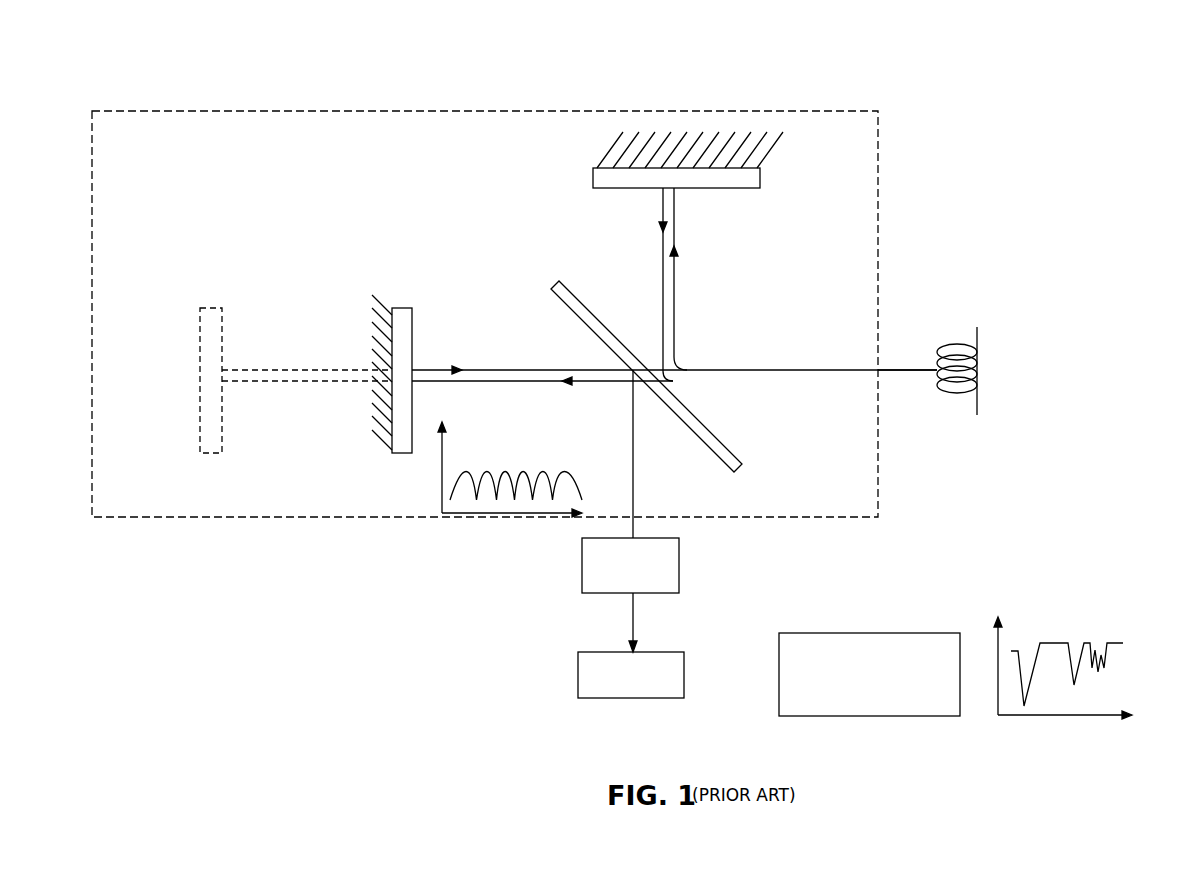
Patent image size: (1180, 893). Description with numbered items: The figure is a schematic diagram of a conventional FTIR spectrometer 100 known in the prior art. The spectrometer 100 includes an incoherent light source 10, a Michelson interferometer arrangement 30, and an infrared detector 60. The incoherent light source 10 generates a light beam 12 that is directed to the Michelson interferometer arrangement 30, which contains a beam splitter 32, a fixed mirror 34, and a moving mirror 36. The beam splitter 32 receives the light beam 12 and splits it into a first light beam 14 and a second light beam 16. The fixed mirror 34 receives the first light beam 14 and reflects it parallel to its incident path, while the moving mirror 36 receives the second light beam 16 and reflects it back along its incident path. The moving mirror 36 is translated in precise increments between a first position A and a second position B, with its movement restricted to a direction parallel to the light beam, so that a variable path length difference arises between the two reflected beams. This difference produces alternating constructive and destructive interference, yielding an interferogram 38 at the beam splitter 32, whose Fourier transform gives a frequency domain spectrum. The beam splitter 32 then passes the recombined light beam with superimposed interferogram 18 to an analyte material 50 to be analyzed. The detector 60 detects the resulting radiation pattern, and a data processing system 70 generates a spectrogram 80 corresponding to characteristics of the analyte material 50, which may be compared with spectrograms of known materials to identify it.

The FTIR spectrometer 100 is at (158, 84).
The Michelson interferometer arrangement 30 is at (833, 110).
The fixed mirror 34 is at (760, 178).
The moving mirror 36 is at (400, 308).
The beam splitter 32 is at (556, 284).
The first light beam 14 is at (676, 207).
The second light beam 16 is at (528, 368).
The recombined light beam with superimposed interferogram 18 is at (633, 460).
The interferogram 38 is at (542, 430).
The incoherent light source 10 is at (977, 372).
The light beam 12 is at (932, 372).
The analyte material 50 is at (679, 565).
The detector 60 is at (608, 652).
The data processing system 70 is at (872, 633).
The spectrogram 80 is at (1097, 614).
The first position A is at (222, 383).
The second position B is at (392, 382).